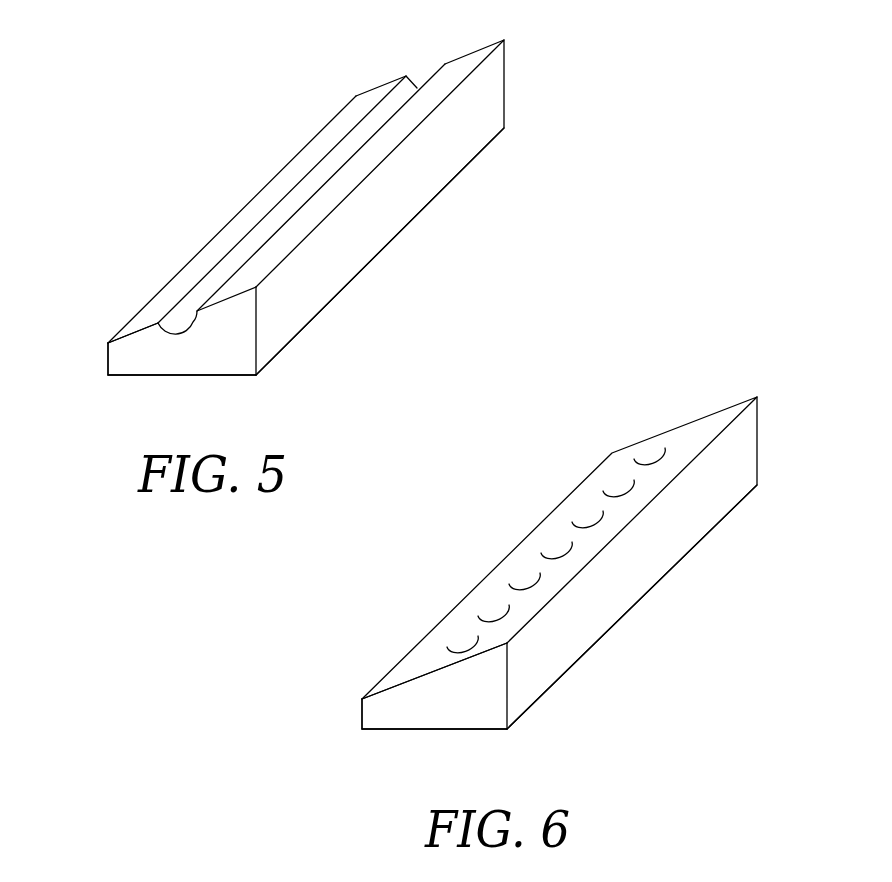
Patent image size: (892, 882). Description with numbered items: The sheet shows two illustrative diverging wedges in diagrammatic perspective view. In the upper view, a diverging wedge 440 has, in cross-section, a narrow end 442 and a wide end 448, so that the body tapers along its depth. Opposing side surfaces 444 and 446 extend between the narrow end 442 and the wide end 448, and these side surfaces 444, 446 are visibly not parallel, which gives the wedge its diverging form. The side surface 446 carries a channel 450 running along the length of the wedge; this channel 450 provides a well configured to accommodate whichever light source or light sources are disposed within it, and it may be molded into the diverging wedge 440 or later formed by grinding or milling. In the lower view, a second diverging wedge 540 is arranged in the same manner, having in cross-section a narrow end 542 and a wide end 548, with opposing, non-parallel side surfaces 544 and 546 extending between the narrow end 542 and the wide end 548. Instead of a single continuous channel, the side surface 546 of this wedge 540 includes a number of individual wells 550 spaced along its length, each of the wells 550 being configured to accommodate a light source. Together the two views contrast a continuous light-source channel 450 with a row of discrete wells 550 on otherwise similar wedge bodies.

In FIG. 5, the diverging wedge 440 is at (235, 163).
In FIG. 5, the narrow end 442 is at (108, 358).
In FIG. 5, the side surface 444 is at (187, 376).
In FIG. 5, the side surface 446 is at (145, 328).
In FIG. 5, the wide end 448 is at (298, 310).
In FIG. 5, the channel 450 is at (370, 128).
In FIG. 6, the diverging wedge 540 is at (490, 520).
In FIG. 6, the narrow end 542 is at (362, 716).
In FIG. 6, the side surface 544 is at (440, 732).
In FIG. 6, the side surface 546 is at (393, 686).
In FIG. 6, the wide end 548 is at (550, 665).
In FIG. 6, the wells 550 is at (622, 490).